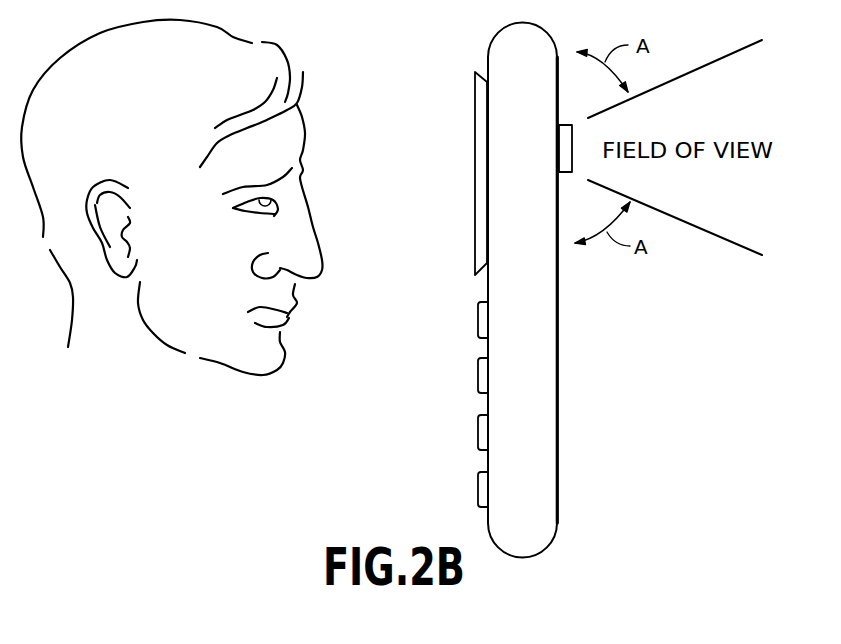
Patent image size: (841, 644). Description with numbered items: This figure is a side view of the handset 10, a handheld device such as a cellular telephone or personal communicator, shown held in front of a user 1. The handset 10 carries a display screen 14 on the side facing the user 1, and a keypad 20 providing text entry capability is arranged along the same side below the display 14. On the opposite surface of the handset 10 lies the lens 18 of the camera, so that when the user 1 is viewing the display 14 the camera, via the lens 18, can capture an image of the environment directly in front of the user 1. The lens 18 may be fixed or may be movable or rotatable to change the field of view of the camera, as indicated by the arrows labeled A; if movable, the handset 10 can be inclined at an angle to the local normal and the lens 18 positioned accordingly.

The user 1 is at (297, 392).
The handset 10 is at (558, 495).
The display screen 14 is at (475, 127).
The lens 18 is at (565, 173).
The keypad 20 is at (457, 302).